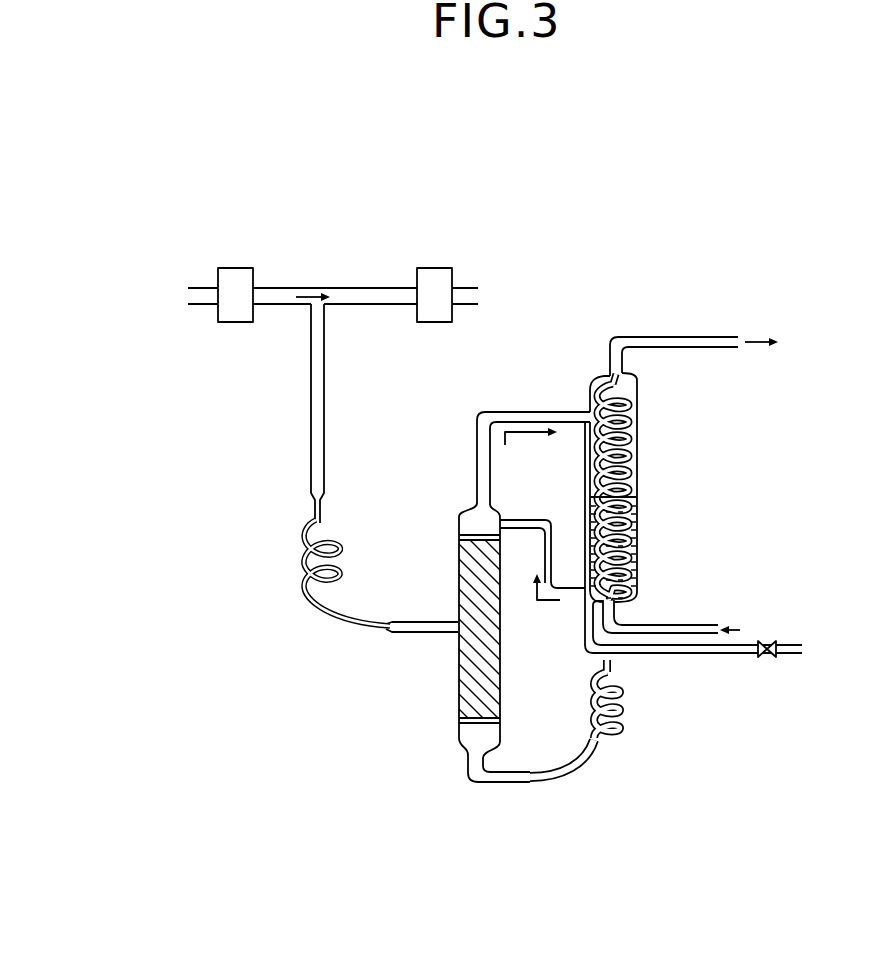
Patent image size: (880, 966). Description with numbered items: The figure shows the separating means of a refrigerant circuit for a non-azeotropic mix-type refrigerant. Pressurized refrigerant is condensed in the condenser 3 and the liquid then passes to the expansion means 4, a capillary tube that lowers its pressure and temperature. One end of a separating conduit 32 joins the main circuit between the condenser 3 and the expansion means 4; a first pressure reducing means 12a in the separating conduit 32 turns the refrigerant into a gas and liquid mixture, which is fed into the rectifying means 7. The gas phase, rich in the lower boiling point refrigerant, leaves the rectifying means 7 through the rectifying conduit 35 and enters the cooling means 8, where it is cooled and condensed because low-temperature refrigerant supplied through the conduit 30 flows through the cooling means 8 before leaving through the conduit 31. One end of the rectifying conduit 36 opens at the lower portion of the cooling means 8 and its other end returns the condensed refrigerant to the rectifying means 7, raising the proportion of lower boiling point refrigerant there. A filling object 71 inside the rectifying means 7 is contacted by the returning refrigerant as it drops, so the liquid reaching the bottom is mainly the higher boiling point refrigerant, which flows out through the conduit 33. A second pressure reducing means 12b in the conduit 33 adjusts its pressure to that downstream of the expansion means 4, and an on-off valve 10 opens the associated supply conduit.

The condenser 3 is at (235, 284).
The expansion means 4 is at (433, 284).
The rectifying means 7 is at (500, 657).
The cooling means 8 is at (647, 466).
The on-off valve 10 is at (767, 660).
The first pressure reducing means 12a is at (300, 566).
The second pressure reducing means 12b is at (620, 728).
The conduit 30 is at (690, 624).
The conduit 31 is at (690, 337).
The separating conduit 32 is at (326, 414).
The conduit 33 is at (498, 788).
The rectifying conduit 35 is at (536, 408).
The rectifying conduit 36 is at (552, 518).
The filling object 71 is at (457, 673).